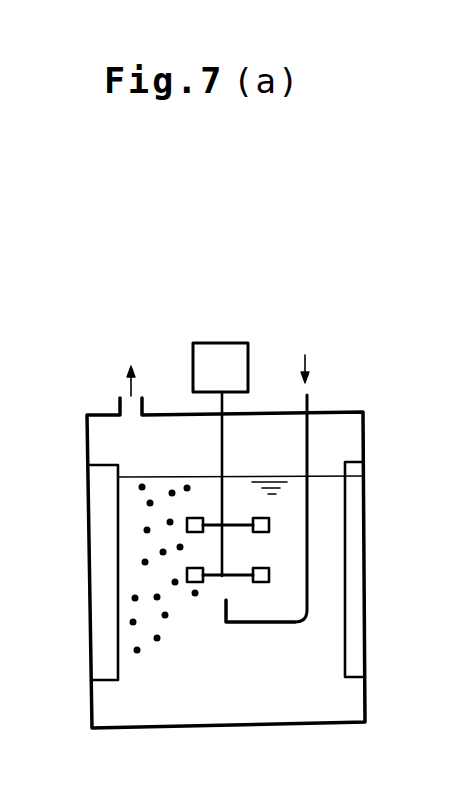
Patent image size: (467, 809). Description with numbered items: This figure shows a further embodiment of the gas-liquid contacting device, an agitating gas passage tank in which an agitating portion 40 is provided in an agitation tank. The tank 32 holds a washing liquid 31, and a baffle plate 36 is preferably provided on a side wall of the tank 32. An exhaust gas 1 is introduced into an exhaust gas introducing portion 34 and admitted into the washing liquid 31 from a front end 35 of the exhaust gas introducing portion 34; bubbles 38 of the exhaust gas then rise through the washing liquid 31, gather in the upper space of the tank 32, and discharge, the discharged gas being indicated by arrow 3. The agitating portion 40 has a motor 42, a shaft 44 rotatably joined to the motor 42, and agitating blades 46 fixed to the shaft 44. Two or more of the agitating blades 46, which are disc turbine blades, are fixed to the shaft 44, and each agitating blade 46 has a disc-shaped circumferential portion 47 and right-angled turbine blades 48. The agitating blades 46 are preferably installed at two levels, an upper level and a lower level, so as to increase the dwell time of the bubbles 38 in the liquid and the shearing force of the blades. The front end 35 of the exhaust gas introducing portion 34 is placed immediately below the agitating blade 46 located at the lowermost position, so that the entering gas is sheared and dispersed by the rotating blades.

The exhaust gas 1 is at (307, 397).
The gas outlet 3 is at (131, 366).
The washing liquid 31 is at (267, 702).
The tank 32 is at (89, 580).
The exhaust gas introducing portion 34 is at (276, 622).
The front end 35 is at (226, 606).
The baffle plate 36 is at (357, 670).
The bubbles 38 is at (167, 619).
The agitating portion 40 is at (347, 353).
The motor 42 is at (222, 343).
The shaft 44 is at (223, 443).
The agitating blade 46 is at (422, 395).
The disc-shaped circumferential portion 47 is at (233, 516).
The right-angled turbine blades 48 is at (268, 518).